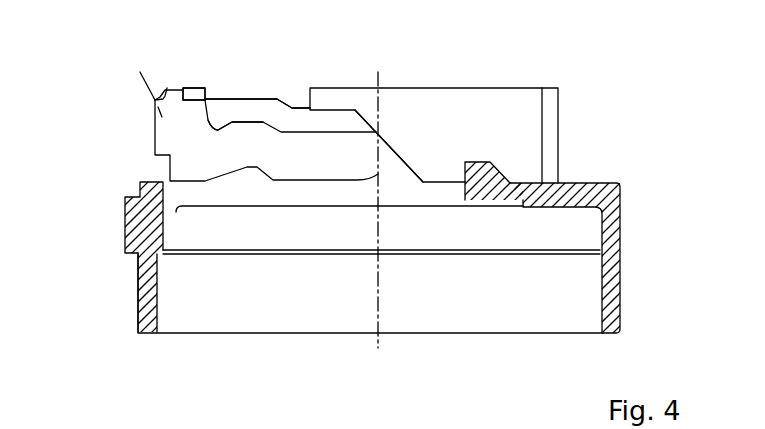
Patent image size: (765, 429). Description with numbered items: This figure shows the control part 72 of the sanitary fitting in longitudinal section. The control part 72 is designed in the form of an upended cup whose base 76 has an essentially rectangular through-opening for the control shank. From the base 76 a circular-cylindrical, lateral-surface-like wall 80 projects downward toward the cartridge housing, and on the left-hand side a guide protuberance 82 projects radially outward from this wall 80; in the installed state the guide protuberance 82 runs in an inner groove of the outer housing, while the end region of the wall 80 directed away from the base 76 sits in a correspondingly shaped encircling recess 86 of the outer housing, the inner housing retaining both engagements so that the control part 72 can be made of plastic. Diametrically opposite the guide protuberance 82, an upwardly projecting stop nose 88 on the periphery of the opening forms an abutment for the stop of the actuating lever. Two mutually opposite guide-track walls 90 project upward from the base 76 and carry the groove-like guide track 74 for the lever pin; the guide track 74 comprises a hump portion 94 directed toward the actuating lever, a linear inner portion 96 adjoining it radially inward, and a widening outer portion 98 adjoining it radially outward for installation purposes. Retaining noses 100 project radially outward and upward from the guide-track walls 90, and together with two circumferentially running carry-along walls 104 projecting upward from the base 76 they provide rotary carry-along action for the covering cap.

The control part 72 is at (625, 202).
The guide track 74 is at (228, 138).
The base 76 is at (572, 192).
The wall 80 is at (147, 305).
The guide protuberance 82 is at (140, 220).
The recess 86 is at (407, 192).
The stop nose 88 is at (495, 165).
The guide-track walls 90 is at (288, 98).
The hump portion 94 is at (252, 135).
The inner portion 96 is at (317, 147).
The outer portion 98 is at (203, 160).
The retaining noses 100 is at (170, 88).
The carry-along walls 104 is at (507, 98).